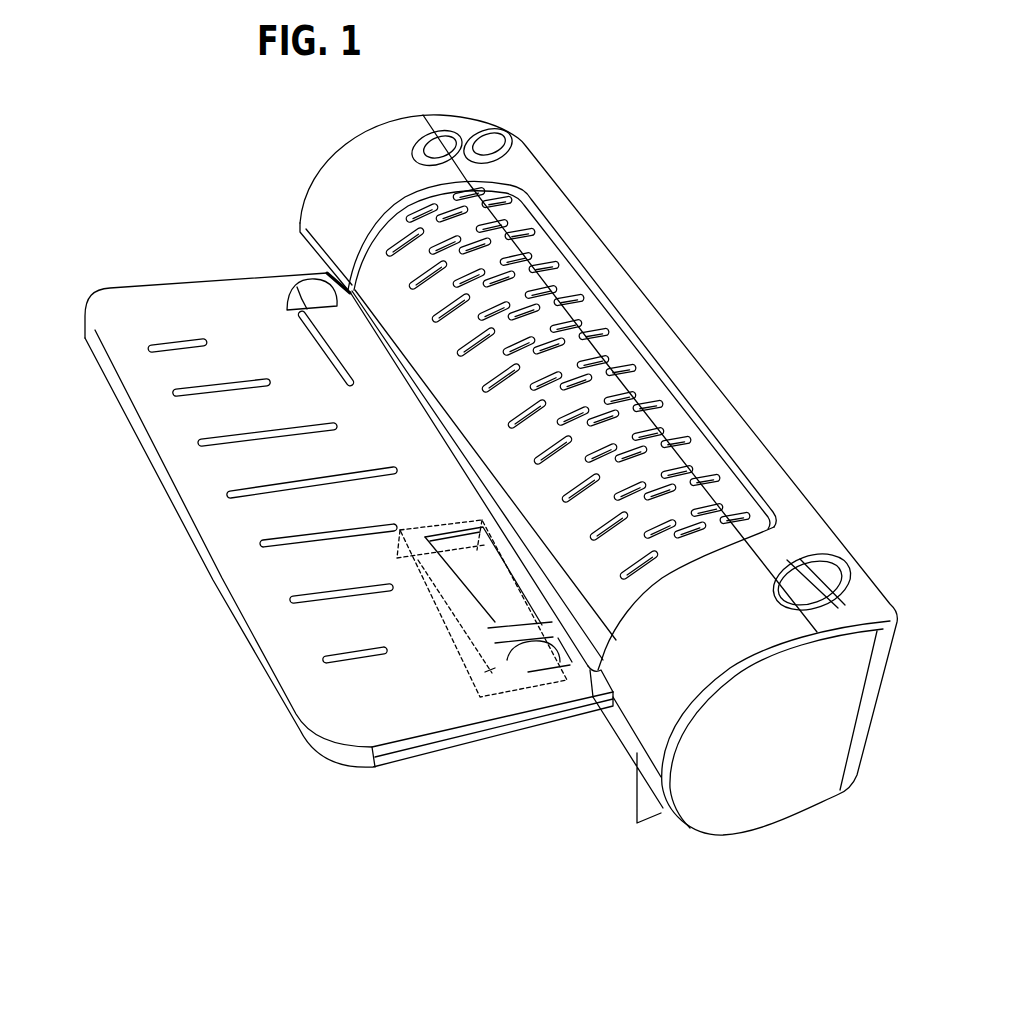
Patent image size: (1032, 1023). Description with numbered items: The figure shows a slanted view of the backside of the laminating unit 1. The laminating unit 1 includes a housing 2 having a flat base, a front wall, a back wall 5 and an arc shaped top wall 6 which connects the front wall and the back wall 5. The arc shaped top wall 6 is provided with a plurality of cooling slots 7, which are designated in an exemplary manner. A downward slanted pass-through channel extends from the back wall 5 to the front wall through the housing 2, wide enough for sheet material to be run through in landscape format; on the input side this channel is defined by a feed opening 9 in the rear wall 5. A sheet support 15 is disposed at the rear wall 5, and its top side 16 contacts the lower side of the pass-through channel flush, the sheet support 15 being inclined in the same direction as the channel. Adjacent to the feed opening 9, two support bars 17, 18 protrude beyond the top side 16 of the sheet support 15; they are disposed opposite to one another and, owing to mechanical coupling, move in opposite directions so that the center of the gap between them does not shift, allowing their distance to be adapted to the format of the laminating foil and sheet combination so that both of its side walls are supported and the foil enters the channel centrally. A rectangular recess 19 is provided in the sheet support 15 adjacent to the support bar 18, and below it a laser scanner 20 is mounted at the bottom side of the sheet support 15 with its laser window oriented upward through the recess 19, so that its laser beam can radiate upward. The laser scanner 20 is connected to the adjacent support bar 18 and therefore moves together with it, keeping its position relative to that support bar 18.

The laminating unit 1 is at (137, 587).
The housing 2 is at (561, 193).
The back wall 5 is at (620, 742).
The arc shaped top wall 6 is at (803, 537).
The cooling slots 7 is at (687, 437).
The feed opening 9 is at (592, 672).
The sheet support 15 is at (325, 761).
The top side 16 is at (347, 707).
The support bar 17 is at (305, 293).
The support bar 18 is at (532, 668).
The rectangular recess 19 is at (462, 618).
The laser scanner 20 is at (487, 583).